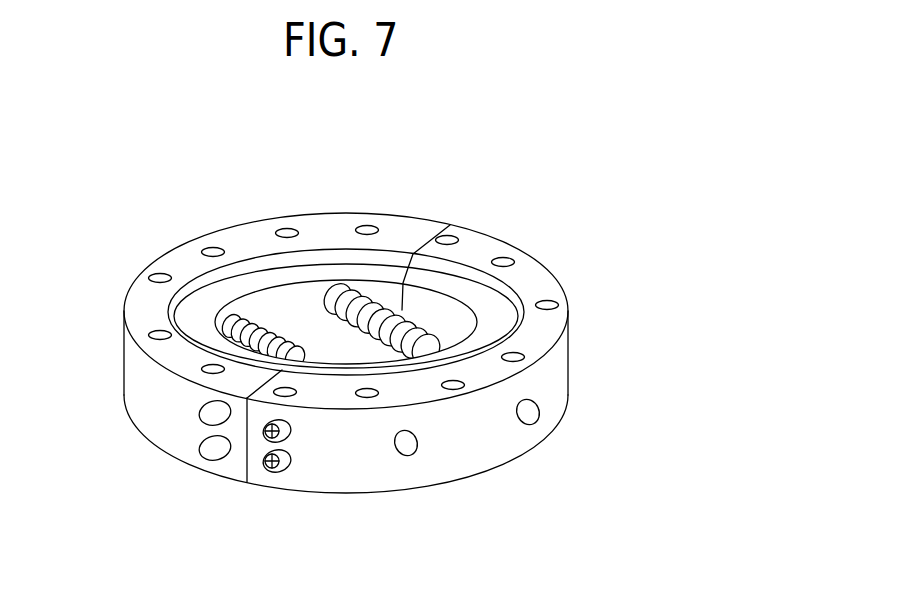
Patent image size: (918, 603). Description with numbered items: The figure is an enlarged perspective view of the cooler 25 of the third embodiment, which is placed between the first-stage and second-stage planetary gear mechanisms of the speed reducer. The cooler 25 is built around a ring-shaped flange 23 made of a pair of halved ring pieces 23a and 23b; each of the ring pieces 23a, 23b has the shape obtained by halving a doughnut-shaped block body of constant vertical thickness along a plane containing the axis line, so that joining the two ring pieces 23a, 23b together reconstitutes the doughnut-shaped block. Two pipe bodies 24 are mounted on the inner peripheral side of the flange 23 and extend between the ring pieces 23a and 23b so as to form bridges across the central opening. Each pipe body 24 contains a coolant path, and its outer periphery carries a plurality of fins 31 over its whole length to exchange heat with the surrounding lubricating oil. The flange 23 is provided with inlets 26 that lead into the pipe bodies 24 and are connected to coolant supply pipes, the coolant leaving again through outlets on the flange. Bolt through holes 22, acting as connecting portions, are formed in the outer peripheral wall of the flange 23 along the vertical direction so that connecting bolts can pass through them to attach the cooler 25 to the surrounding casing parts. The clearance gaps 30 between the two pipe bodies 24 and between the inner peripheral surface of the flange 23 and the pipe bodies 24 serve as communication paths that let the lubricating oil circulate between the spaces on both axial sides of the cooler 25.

The bolt through holes 22 is at (125, 312).
The flange 23 is at (554, 168).
The ring piece 23a is at (382, 228).
The ring piece 23b is at (520, 258).
The pipe bodies 24 is at (260, 338).
The cooler 25 is at (155, 252).
The inlets 26 is at (408, 447).
The clearance gaps 30 is at (440, 317).
The fins 31 is at (382, 297).